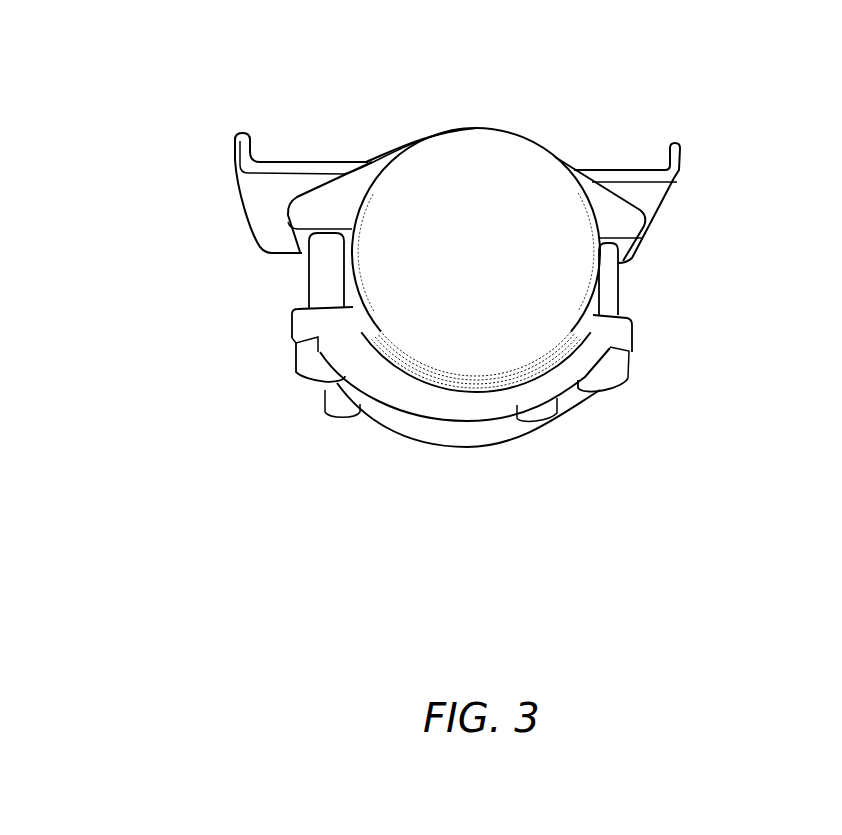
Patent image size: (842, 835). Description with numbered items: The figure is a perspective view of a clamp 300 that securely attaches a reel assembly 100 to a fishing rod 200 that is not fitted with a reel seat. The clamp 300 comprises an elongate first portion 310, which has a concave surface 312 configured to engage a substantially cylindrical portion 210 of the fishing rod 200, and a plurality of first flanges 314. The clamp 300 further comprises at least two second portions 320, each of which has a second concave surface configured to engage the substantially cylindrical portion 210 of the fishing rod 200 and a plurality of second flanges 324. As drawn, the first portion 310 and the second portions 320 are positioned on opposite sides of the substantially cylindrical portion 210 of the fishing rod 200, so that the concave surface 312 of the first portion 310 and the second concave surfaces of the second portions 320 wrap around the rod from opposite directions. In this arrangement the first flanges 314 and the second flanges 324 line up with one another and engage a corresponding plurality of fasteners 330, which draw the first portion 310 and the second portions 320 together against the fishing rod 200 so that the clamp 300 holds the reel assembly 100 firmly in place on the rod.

The reel assembly 100 is at (222, 150).
The fishing rod 200 is at (507, 160).
The substantially cylindrical portion 210 is at (380, 353).
The clamp 300 is at (650, 460).
The elongate first portion 310 is at (467, 432).
The concave surface 312 is at (445, 376).
The first flanges 314 is at (300, 325).
The second portions 320 is at (333, 200).
The second flanges 324 is at (300, 213).
The fasteners 330 is at (325, 285).